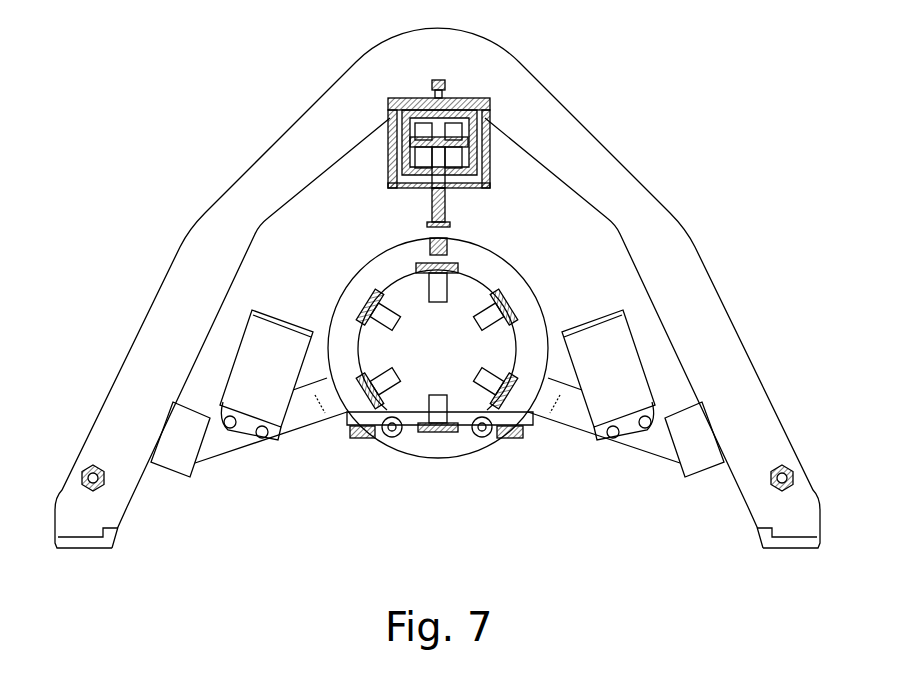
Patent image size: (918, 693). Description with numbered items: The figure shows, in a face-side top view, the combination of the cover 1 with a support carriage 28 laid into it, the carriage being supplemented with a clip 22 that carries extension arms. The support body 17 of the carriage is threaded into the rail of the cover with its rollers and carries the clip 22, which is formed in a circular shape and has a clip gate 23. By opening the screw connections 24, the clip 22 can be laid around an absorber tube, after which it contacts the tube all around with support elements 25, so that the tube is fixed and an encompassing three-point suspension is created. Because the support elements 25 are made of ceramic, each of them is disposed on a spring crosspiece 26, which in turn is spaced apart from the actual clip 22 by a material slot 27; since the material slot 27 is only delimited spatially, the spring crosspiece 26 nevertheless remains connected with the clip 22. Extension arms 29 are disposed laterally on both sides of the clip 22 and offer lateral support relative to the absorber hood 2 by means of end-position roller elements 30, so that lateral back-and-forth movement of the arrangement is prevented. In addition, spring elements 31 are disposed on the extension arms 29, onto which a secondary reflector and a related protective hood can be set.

The cover 1 is at (722, 292).
The absorber hood 2 is at (139, 508).
The support body 17 is at (425, 198).
The clip 22 is at (350, 293).
The clip gate 23 is at (432, 460).
The screw connections 24 is at (513, 452).
The support elements 25 is at (477, 315).
The spring crosspiece 26 is at (493, 373).
The material slot 27 is at (505, 300).
The support carriage 28 is at (348, 458).
The extension arms 29 is at (650, 445).
The end-position roller elements 30 is at (703, 432).
The spring elements 31 is at (620, 352).